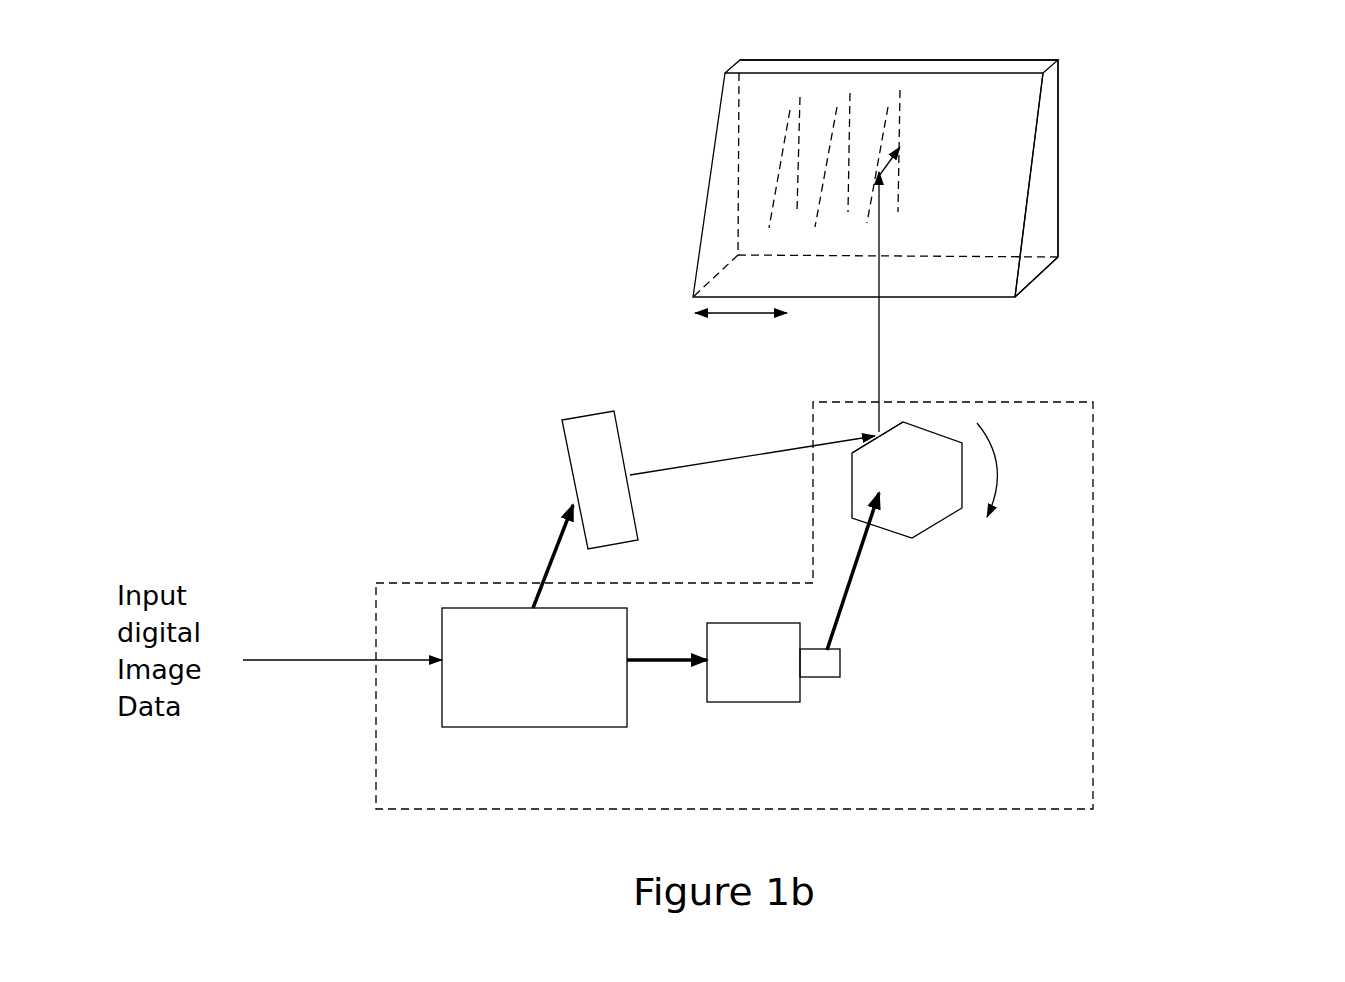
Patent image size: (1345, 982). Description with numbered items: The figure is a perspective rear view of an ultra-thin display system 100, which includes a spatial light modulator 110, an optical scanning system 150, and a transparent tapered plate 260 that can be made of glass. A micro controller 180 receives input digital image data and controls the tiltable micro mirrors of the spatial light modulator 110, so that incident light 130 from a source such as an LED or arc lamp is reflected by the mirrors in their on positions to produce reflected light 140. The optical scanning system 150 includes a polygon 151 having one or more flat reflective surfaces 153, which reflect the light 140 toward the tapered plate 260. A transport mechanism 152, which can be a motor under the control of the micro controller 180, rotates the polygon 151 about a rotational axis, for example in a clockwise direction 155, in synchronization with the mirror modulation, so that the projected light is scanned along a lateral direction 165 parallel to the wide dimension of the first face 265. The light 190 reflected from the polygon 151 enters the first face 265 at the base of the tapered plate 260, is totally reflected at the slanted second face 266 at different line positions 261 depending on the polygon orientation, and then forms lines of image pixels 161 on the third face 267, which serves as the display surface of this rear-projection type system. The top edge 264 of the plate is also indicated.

The ultra-thin display system 100 is at (1243, 112).
The spatial light modulator 110 is at (637, 505).
The incident light 130 is at (630, 473).
The reflected light 140 is at (752, 448).
The optical scanning system 150 is at (1093, 682).
The polygon 151 is at (935, 508).
The transport mechanism 152 is at (760, 688).
The flat reflective surfaces 153 is at (890, 420).
The clockwise direction 155 is at (1021, 470).
The lines of image pixels 161 is at (800, 97).
The lateral direction 165 is at (741, 335).
The micro controller 180 is at (573, 713).
The light reflected from the polygon 190 is at (882, 331).
The transparent tapered plate 260 is at (702, 227).
The line positions 261 is at (865, 208).
The top surface 264 is at (1025, 68).
The first face 265 is at (1037, 282).
The second face 266 is at (990, 152).
The third face 267 is at (1060, 213).